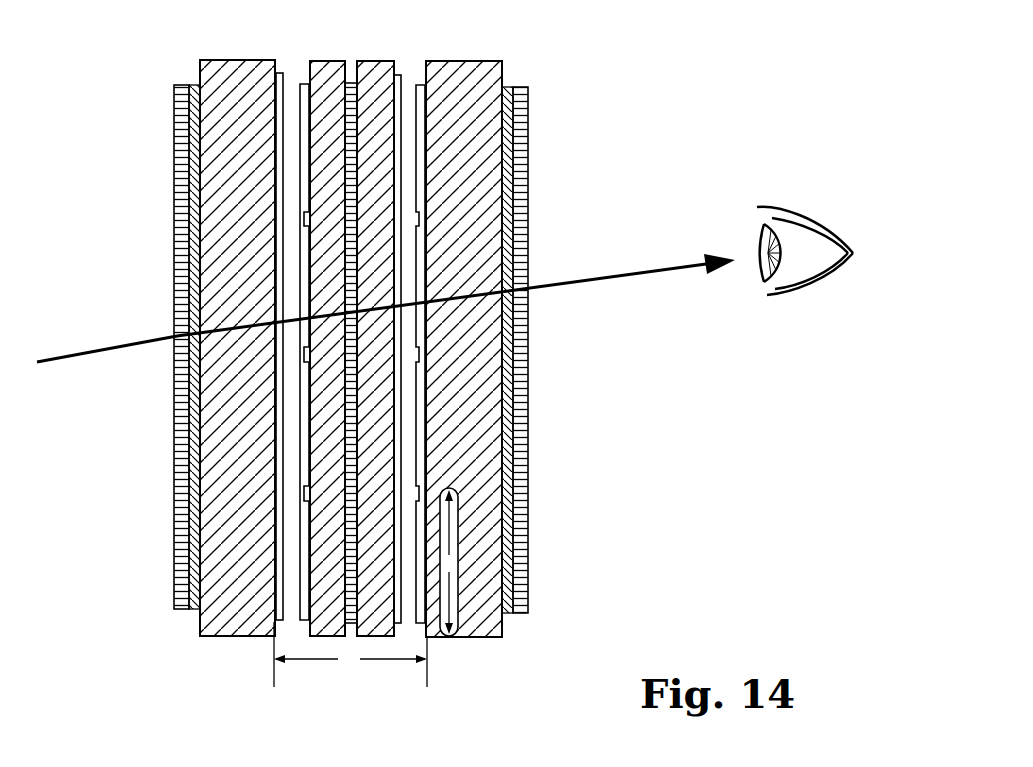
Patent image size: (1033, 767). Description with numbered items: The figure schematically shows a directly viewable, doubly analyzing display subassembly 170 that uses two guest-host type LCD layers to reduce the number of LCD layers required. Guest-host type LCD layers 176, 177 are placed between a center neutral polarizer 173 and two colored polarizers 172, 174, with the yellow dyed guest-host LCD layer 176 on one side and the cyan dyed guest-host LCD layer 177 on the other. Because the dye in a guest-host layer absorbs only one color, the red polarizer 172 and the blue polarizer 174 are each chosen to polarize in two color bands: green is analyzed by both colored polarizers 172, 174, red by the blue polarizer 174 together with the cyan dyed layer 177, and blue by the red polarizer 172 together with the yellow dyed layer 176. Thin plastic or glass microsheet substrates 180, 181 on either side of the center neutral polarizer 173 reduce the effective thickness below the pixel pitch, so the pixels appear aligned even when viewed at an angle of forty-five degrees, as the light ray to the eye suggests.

The doubly analyzing display subassembly 170 is at (325, 369).
The red polarizer 172 is at (181, 84).
The center neutral polarizer 173 is at (351, 82).
The blue polarizer 174 is at (525, 87).
The yellow dyed guest-host LCD layer 176 is at (294, 76).
The cyan dyed guest-host LCD layer 177 is at (408, 84).
The microsheet substrate 180 is at (314, 637).
The microsheet substrate 181 is at (376, 637).